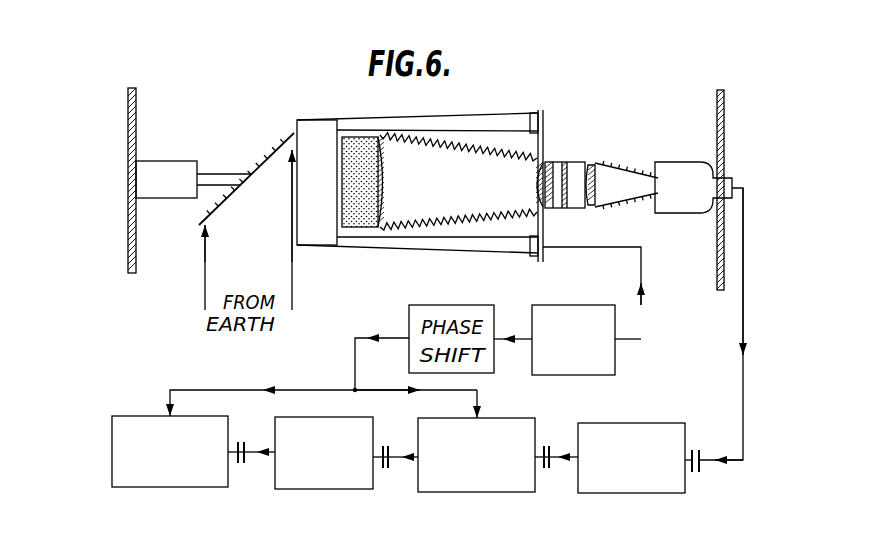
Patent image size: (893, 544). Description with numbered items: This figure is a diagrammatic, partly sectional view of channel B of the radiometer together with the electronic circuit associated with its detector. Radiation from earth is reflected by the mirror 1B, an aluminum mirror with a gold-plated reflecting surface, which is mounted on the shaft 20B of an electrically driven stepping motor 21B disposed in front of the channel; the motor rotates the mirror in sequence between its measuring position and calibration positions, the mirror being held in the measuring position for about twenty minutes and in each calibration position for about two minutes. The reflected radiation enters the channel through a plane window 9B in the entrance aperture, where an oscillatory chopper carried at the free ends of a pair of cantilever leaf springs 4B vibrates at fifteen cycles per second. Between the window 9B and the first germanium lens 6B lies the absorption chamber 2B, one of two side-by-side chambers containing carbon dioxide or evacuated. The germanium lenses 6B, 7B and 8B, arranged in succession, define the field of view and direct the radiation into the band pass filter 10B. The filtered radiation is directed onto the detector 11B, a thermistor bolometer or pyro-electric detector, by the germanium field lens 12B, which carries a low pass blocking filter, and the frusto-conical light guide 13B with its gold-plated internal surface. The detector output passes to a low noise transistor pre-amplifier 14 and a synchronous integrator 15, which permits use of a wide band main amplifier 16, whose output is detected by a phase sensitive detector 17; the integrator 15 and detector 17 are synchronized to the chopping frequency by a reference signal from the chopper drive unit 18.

The mirror 1B is at (276, 150).
The shaft 20B is at (212, 178).
The stepping motor 21B is at (152, 193).
The absorption chamber 2B is at (365, 147).
The cantilever leaf springs 4B is at (485, 121).
The germanium lens 6B is at (383, 162).
The germanium lens 7B is at (535, 182).
The germanium lens 8B is at (557, 200).
The plane window 9B is at (337, 212).
The band pass filter 10B is at (567, 172).
The detector 11B is at (682, 204).
The germanium field lens 12B is at (613, 172).
The frusto-conical light guide 13B is at (618, 204).
The low noise transistor pre-amplifier 14 is at (630, 494).
The synchronous integrator 15 is at (468, 492).
The main amplifier 16 is at (315, 489).
The phase sensitive detector 17 is at (145, 488).
The chopper drive unit 18 is at (592, 375).